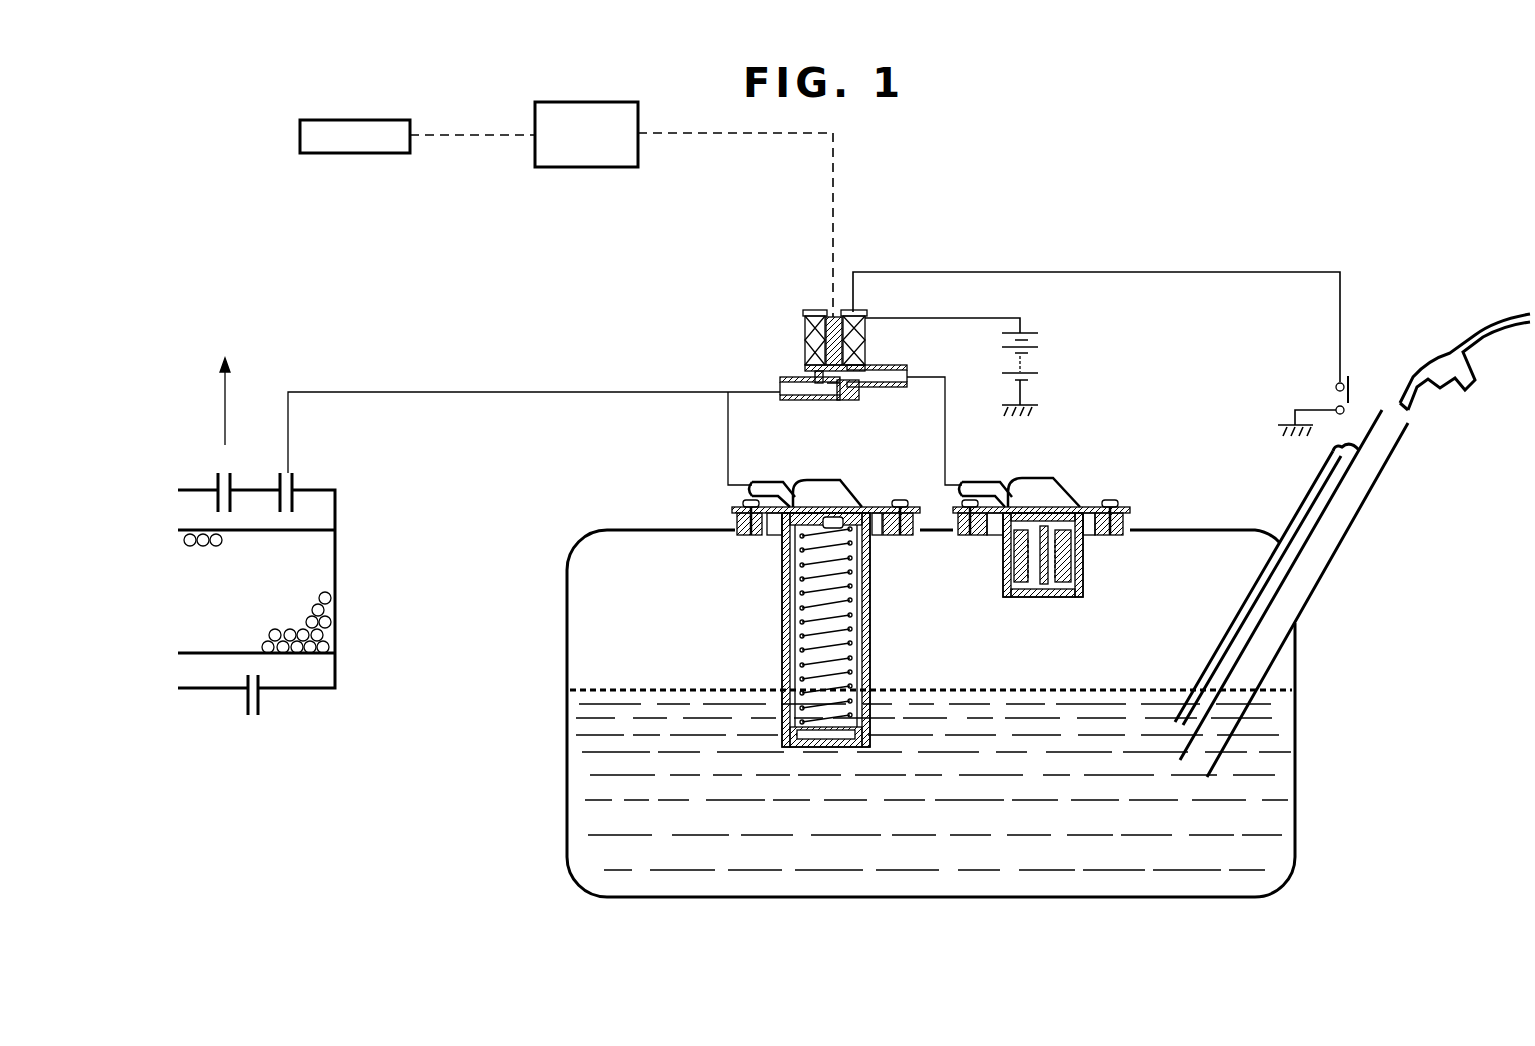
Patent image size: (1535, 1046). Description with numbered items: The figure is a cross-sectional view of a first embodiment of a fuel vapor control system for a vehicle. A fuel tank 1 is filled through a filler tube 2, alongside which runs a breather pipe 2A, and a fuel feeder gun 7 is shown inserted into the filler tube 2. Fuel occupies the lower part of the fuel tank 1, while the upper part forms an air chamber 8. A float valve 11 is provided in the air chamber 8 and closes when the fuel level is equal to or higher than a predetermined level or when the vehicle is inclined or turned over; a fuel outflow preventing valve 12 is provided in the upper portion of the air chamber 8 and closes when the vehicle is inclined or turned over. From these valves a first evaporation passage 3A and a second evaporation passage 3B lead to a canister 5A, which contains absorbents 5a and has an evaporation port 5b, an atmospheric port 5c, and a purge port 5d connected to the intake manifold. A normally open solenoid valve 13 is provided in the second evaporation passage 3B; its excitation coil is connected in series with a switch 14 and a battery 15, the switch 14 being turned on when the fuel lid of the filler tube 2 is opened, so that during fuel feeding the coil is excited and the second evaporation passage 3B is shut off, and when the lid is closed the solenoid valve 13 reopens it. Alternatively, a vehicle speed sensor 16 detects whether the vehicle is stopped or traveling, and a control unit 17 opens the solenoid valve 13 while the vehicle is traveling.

The fuel tank 1 is at (1148, 528).
The filler tube 2 is at (1357, 520).
The breather pipe 2A is at (1302, 500).
The first evaporation passage 3A is at (481, 392).
The second evaporation passage 3B is at (945, 423).
The canister 5A is at (335, 548).
The absorbents 5a is at (318, 610).
The evaporation port 5b is at (292, 484).
The atmospheric port 5c is at (259, 705).
The purge port 5d is at (216, 484).
The fuel feeder gun 7 is at (1436, 360).
The air chamber 8 is at (950, 628).
The float valve 11 is at (780, 594).
The fuel outflow preventing valve 12 is at (1085, 573).
The solenoid valve 13 is at (805, 328).
The switch 14 is at (1336, 404).
The battery 15 is at (1037, 357).
The vehicle speed sensor 16 is at (380, 153).
The control unit 17 is at (607, 167).